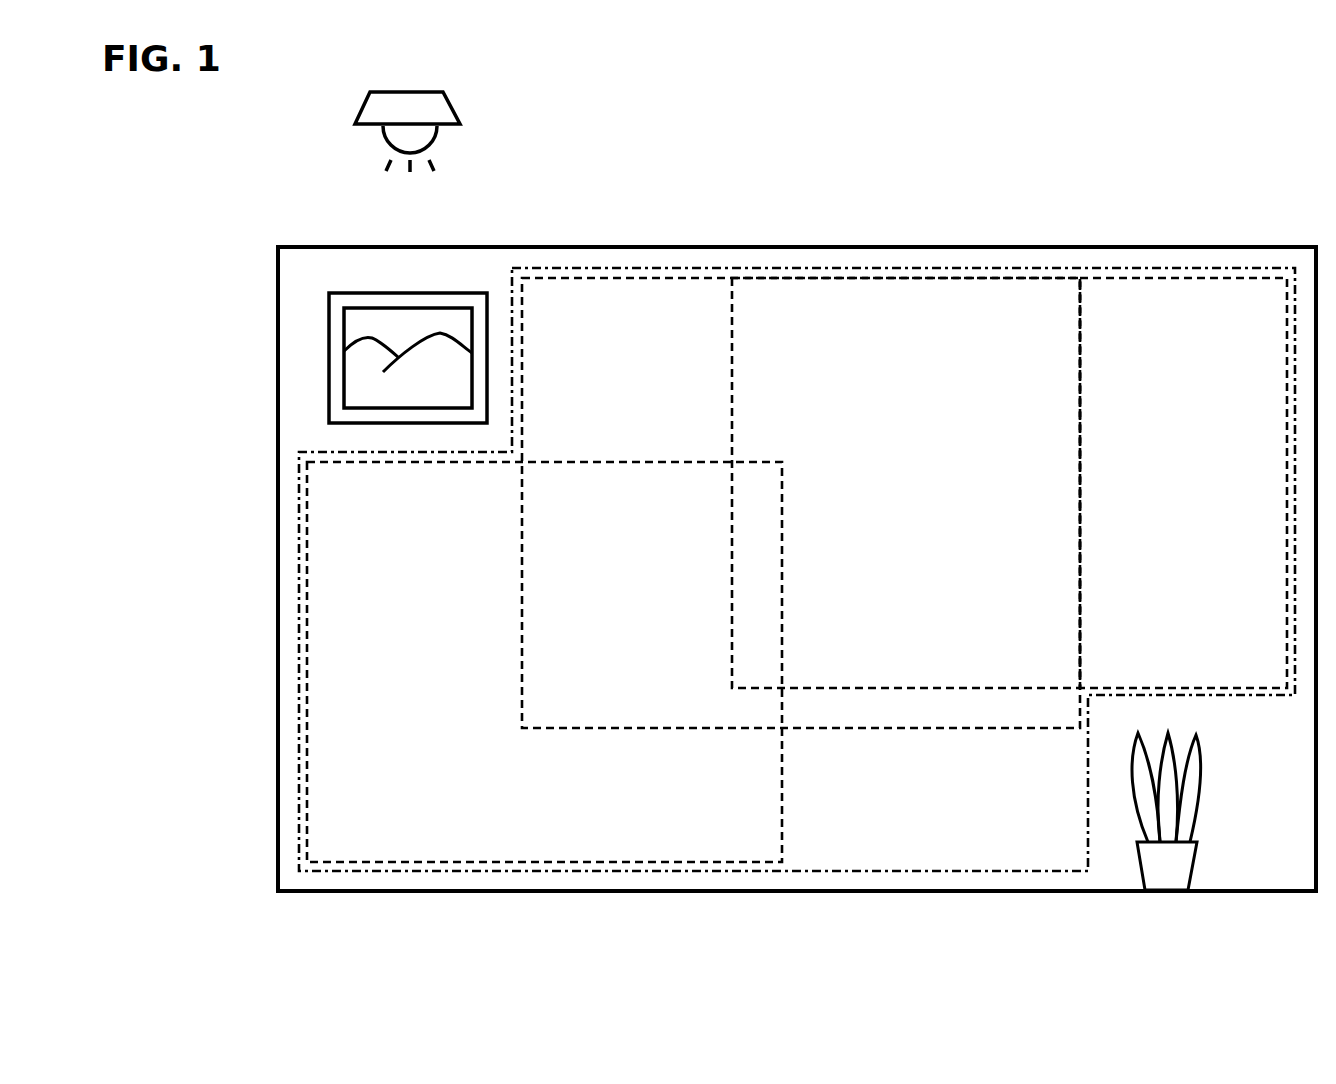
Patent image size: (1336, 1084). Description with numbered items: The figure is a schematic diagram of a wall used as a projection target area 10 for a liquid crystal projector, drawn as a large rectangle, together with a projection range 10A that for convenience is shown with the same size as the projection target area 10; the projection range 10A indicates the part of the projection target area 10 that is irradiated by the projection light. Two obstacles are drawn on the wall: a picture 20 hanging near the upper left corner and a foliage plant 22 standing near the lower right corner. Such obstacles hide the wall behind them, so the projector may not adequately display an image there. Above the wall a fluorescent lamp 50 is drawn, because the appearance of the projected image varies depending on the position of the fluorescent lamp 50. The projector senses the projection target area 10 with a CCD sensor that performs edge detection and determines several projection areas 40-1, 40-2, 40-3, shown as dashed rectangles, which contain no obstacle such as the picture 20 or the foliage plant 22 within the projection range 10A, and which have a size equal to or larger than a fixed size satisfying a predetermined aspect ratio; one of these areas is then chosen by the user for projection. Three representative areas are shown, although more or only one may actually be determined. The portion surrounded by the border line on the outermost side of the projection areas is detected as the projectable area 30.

The projection target area 10 is at (797, 535).
The projection range 10A is at (1196, 247).
The picture 20 is at (360, 292).
The foliage plant 22 is at (1167, 878).
The projectable area 30 is at (1017, 268).
The projection area 40-1 is at (300, 528).
The projection area 40-2 is at (617, 278).
The projection area 40-3 is at (1255, 278).
The fluorescent lamp 50 is at (447, 108).